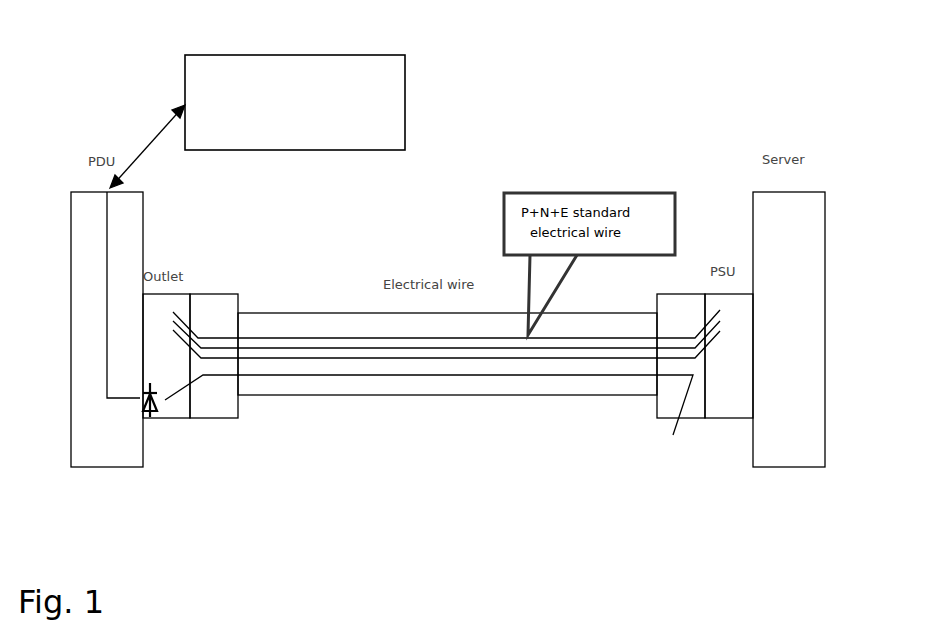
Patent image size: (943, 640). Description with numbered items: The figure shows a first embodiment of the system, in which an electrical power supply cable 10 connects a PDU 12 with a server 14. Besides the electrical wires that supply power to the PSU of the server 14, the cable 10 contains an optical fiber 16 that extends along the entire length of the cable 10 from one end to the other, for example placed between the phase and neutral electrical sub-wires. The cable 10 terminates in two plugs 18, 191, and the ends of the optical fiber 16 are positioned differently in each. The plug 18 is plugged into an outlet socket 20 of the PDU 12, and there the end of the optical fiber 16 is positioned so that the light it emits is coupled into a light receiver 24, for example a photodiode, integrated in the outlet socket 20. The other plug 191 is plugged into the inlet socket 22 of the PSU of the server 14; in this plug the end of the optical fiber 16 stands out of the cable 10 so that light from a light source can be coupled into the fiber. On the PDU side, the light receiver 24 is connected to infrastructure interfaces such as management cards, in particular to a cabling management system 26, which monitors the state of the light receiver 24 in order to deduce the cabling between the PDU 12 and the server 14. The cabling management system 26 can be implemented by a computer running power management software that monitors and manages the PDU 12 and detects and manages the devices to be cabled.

The electrical power supply cable 10 is at (447, 354).
The PDU 12 is at (107, 329).
The server 14 is at (789, 329).
The optical fiber 16 is at (429, 435).
The plug 18 is at (214, 356).
The plug 191 is at (681, 356).
The outlet socket 20 is at (433, 334).
The inlet socket 22 is at (729, 356).
The light receiver 24 is at (247, 465).
The cabling management system 26 is at (295, 102).